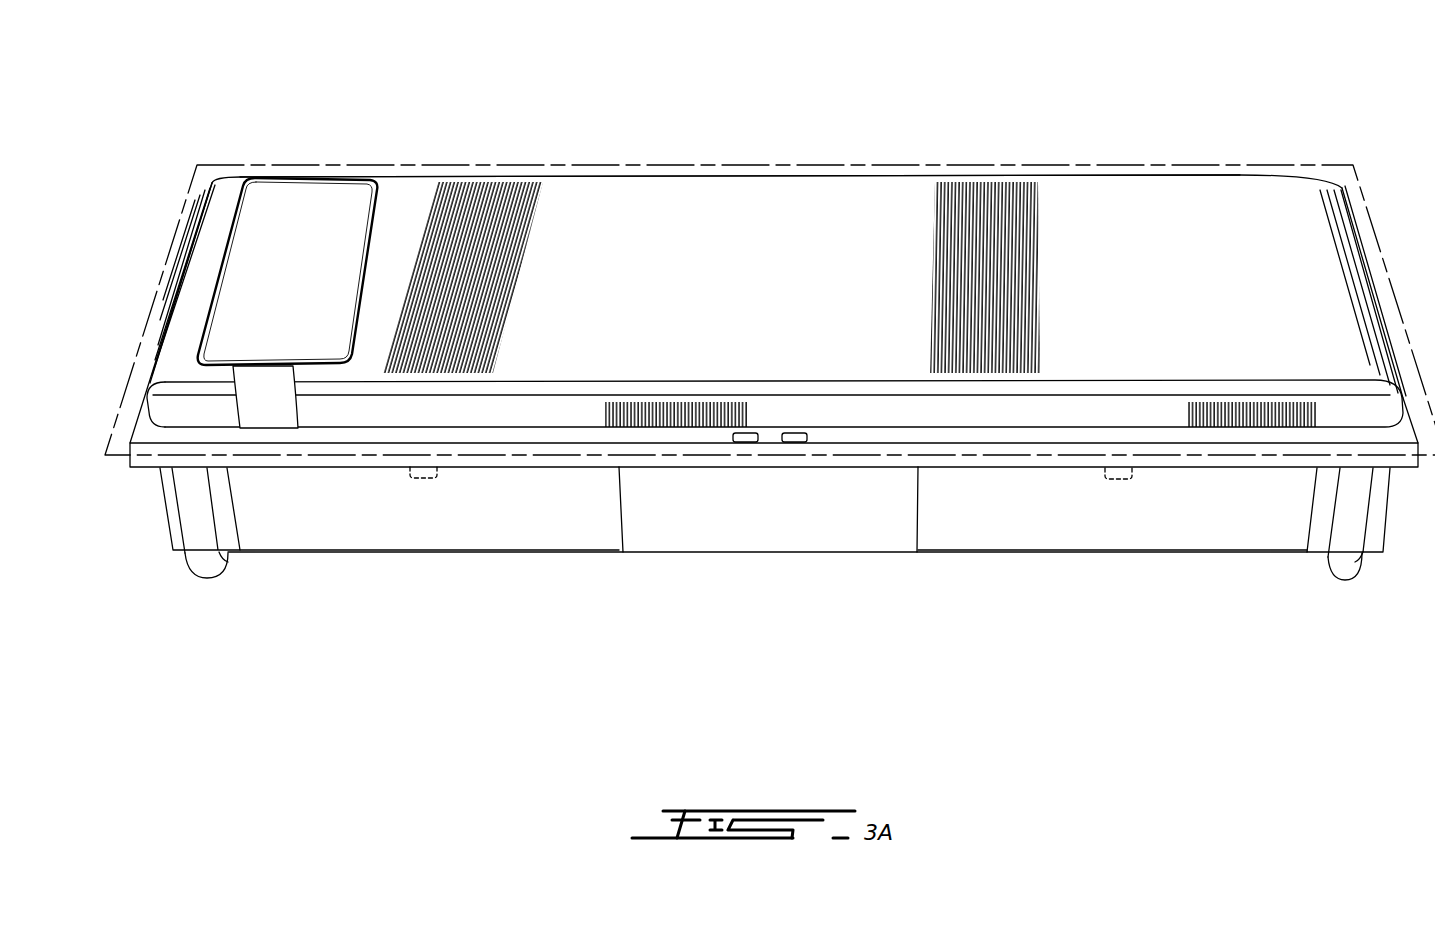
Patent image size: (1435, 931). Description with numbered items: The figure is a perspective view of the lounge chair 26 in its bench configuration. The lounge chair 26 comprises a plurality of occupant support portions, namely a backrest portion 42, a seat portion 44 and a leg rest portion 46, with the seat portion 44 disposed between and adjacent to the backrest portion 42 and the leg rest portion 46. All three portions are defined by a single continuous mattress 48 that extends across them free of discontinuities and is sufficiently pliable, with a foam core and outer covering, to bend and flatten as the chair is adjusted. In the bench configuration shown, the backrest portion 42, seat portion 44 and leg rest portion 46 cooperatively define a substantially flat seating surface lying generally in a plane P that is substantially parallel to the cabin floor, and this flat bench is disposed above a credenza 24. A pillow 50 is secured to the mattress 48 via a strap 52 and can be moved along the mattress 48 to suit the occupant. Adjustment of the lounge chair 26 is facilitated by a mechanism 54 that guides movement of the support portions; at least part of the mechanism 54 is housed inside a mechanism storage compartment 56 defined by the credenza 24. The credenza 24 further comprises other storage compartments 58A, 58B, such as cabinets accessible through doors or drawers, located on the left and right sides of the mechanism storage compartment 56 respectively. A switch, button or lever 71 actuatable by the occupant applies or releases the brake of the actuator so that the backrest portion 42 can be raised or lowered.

The plane P is at (1297, 162).
The credenza 24 is at (463, 606).
The lounge chair 26 is at (532, 130).
The backrest portion 42 is at (396, 295).
The seat portion 44 is at (755, 296).
The leg rest portion 46 is at (1175, 296).
The mattress 48 is at (748, 200).
The pillow 50 is at (305, 195).
The strap 52 is at (261, 407).
The mechanism 54 is at (881, 552).
The mechanism storage compartment 56 is at (652, 530).
The other storage compartment 58A is at (338, 530).
The other storage compartment 58B is at (1122, 528).
The lever 71 is at (795, 443).